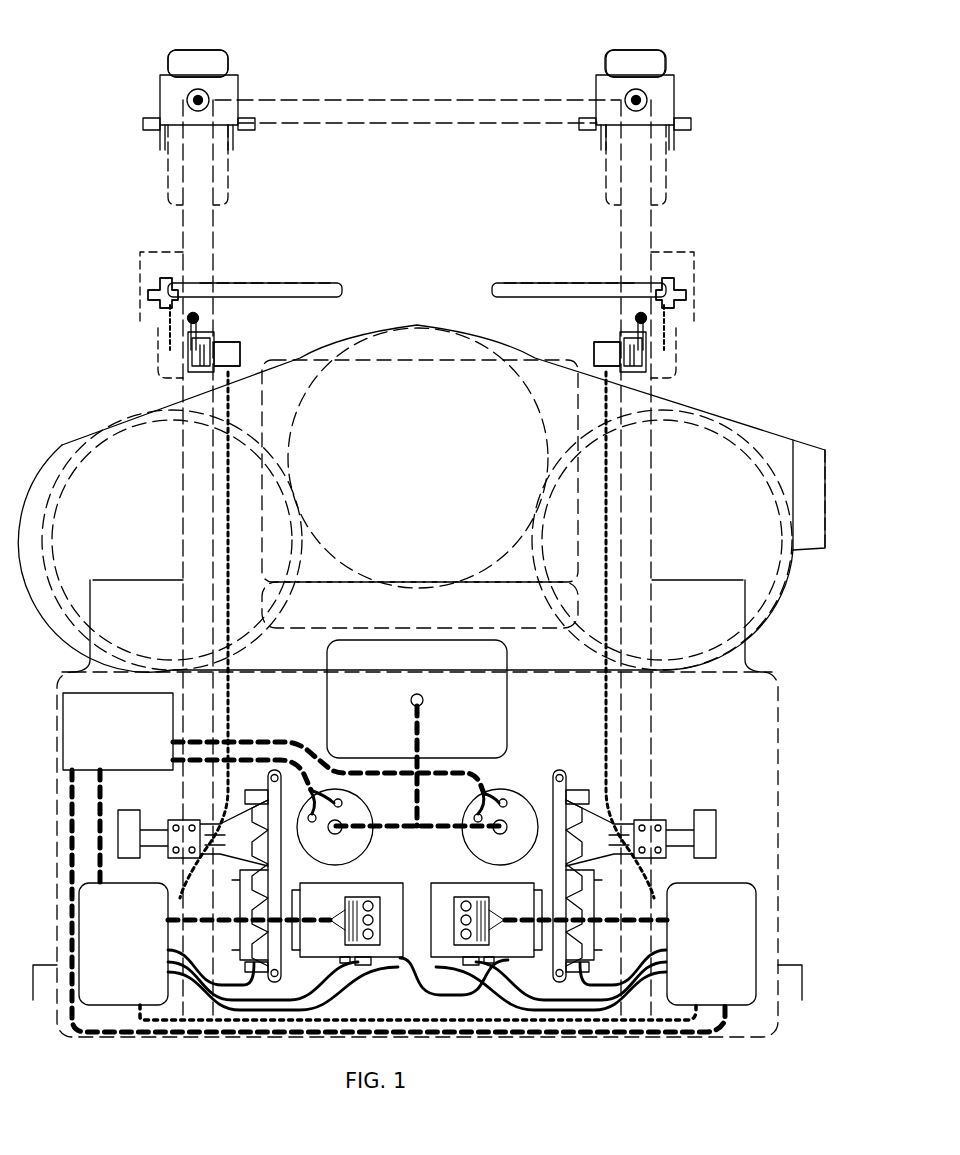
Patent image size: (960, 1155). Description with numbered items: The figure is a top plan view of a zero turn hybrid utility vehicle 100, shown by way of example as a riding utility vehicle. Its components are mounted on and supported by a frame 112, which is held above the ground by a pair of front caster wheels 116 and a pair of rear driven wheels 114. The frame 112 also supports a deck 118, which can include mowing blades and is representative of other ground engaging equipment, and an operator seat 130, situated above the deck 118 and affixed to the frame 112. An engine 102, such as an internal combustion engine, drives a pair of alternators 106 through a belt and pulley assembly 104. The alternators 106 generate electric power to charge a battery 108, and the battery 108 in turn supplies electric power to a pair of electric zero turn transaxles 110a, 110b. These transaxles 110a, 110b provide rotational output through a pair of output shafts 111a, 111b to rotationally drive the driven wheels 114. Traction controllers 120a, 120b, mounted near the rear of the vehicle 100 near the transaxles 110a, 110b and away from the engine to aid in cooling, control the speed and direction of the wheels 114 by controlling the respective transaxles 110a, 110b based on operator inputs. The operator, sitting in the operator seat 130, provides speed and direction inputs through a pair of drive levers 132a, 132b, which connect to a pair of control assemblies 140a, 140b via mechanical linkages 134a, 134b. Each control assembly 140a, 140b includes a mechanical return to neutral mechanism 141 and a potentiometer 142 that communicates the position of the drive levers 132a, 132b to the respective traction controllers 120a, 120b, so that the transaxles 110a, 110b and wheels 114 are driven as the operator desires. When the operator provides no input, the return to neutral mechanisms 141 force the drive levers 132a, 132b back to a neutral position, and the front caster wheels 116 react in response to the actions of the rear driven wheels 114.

The zero turn hybrid utility vehicle 100 is at (90, 117).
The engine 102 is at (417, 699).
The belt and pulley assembly 104 is at (420, 738).
The alternators 106 is at (521, 808).
The battery 108 is at (118, 731).
The electric zero turn transaxle 110a is at (636, 942).
The electric zero turn transaxle 110b is at (198, 942).
The output shaft 111a is at (658, 822).
The output shaft 111b is at (176, 822).
The frame 112 is at (183, 236).
The driven wheels 114 is at (52, 970).
The caster wheels 116 is at (198, 50).
The deck 118 is at (135, 408).
The traction controller 120a is at (711, 944).
The traction controller 120b is at (123, 944).
The operator seat 130 is at (522, 630).
The drive lever 132a is at (516, 283).
The drive lever 132b is at (318, 283).
The mechanical linkage 134a is at (666, 312).
The mechanical linkage 134b is at (168, 312).
The control assembly 140a is at (694, 354).
The control assembly 140b is at (140, 354).
The return to neutral mechanism 141 is at (200, 328).
The potentiometer 142 is at (242, 356).